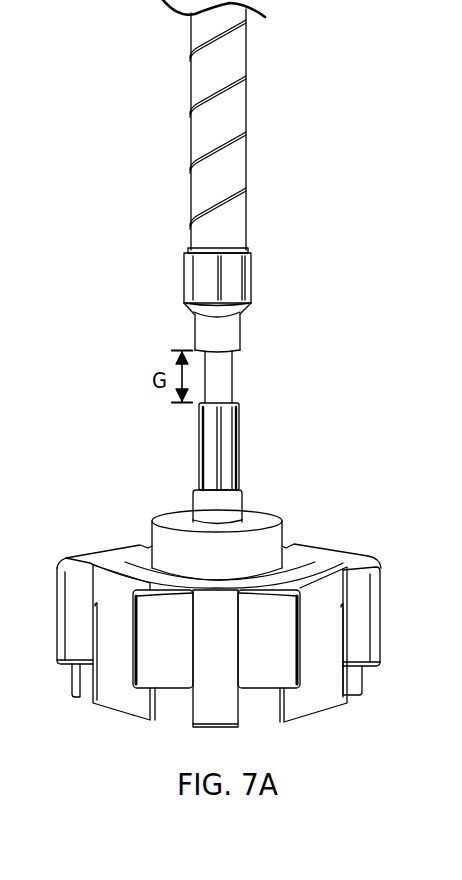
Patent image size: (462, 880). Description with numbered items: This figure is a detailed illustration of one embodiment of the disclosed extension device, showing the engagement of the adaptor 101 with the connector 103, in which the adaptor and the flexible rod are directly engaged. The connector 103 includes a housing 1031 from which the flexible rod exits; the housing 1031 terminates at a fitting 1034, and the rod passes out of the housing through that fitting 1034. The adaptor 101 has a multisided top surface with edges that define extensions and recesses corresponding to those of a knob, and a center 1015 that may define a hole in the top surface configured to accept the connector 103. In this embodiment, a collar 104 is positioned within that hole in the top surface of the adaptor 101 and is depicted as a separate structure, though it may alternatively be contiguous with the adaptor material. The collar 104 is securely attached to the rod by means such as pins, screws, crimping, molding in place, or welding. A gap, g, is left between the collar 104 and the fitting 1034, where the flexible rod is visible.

The connector 103 is at (235, 152).
The housing 1031 is at (248, 263).
The fitting 1034 is at (234, 401).
The collar 104 is at (198, 450).
The center 1015 is at (233, 528).
The adaptor 101 is at (272, 546).